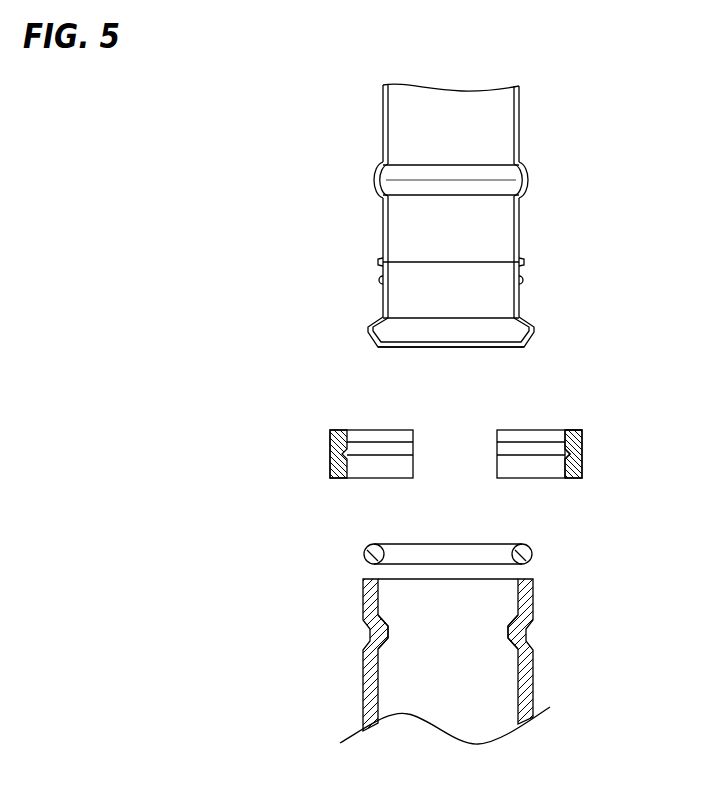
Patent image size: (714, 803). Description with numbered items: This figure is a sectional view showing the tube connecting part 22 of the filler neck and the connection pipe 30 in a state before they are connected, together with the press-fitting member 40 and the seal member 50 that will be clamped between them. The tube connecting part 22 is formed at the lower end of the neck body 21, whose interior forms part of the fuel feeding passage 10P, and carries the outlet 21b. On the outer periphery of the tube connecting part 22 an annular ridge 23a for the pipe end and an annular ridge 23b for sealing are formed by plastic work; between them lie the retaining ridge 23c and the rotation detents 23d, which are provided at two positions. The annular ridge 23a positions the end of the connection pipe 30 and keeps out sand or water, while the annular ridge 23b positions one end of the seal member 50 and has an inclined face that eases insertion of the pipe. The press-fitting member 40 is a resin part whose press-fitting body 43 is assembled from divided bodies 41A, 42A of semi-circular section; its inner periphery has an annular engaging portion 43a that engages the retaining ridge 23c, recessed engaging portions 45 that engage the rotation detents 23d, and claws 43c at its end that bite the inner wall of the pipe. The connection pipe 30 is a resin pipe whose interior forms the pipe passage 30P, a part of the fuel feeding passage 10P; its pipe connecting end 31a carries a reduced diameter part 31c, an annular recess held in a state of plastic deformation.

The fuel feeding passage 10P is at (471, 122).
The neck body 21 is at (519, 88).
The outlet 21b is at (488, 348).
The tube connecting part 22 is at (520, 220).
The annular ridge for pipe end 23a is at (530, 182).
The annular ridge for sealing 23b is at (533, 326).
The retaining ridge 23c is at (524, 262).
The rotation detent 23d is at (524, 283).
The press-fitting member 40 is at (241, 415).
The divided body 41A is at (497, 435).
The divided body 42A is at (418, 479).
The press-fitting body 43 is at (582, 470).
The engaging portion 43a is at (582, 455).
The claw 43c is at (583, 430).
The engaging portion 45 is at (345, 478).
The seal member 50 is at (535, 553).
The pipe passage 30P is at (474, 651).
The connection pipe 30 is at (533, 678).
The pipe connecting end 31a is at (533, 600).
The reduced diameter part 31c is at (526, 632).